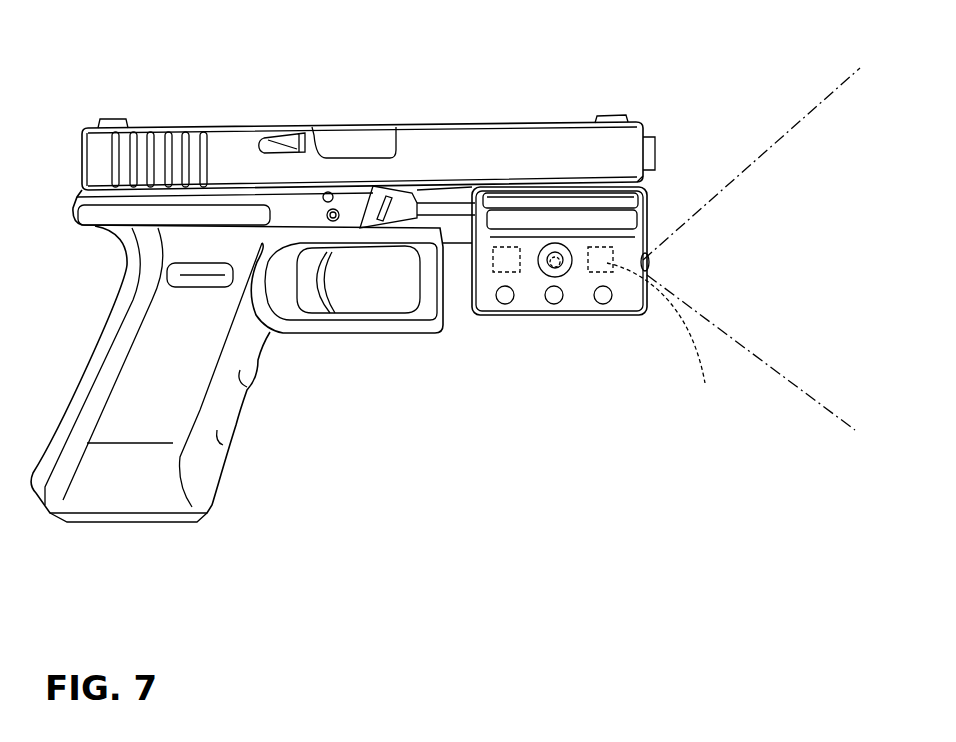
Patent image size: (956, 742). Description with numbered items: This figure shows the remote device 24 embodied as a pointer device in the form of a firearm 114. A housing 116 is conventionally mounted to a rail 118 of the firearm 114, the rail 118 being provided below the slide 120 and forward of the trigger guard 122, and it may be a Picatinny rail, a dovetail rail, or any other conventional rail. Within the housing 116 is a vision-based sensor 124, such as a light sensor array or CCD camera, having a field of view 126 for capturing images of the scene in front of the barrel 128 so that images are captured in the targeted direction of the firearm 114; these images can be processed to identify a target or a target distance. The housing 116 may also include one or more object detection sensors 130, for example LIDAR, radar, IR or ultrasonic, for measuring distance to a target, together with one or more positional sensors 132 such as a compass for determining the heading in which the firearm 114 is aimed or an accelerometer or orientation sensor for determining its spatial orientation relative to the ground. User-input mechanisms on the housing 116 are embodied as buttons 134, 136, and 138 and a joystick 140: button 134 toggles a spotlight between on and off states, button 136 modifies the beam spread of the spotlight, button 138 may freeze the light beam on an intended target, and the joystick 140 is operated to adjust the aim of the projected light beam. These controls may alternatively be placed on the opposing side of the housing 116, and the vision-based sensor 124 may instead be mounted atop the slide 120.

The firearm 114 is at (275, 105).
The slide 120 is at (483, 138).
The barrel 128 is at (663, 140).
The rail 118 is at (663, 187).
The joystick 140 is at (557, 263).
The vision-based sensor 124 is at (650, 262).
The trigger guard 122 is at (393, 335).
The positional sensor 132 is at (477, 290).
The housing 116 is at (497, 318).
The button 134 is at (508, 301).
The button 136 is at (554, 302).
The button 138 is at (604, 302).
The remote device 24 is at (584, 342).
The object detection sensor 130 is at (669, 337).
The field of view 126 is at (775, 370).